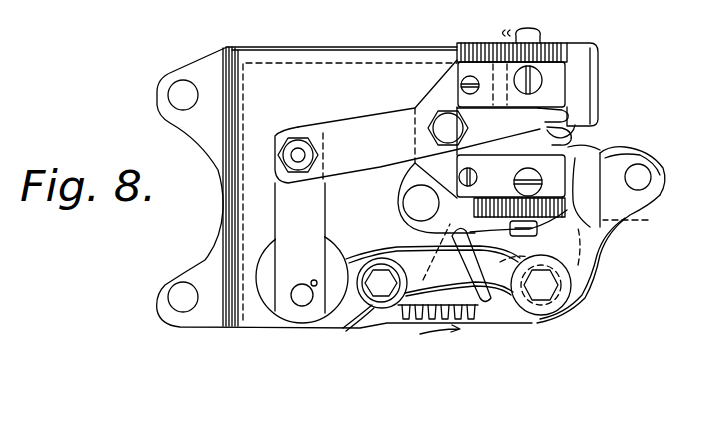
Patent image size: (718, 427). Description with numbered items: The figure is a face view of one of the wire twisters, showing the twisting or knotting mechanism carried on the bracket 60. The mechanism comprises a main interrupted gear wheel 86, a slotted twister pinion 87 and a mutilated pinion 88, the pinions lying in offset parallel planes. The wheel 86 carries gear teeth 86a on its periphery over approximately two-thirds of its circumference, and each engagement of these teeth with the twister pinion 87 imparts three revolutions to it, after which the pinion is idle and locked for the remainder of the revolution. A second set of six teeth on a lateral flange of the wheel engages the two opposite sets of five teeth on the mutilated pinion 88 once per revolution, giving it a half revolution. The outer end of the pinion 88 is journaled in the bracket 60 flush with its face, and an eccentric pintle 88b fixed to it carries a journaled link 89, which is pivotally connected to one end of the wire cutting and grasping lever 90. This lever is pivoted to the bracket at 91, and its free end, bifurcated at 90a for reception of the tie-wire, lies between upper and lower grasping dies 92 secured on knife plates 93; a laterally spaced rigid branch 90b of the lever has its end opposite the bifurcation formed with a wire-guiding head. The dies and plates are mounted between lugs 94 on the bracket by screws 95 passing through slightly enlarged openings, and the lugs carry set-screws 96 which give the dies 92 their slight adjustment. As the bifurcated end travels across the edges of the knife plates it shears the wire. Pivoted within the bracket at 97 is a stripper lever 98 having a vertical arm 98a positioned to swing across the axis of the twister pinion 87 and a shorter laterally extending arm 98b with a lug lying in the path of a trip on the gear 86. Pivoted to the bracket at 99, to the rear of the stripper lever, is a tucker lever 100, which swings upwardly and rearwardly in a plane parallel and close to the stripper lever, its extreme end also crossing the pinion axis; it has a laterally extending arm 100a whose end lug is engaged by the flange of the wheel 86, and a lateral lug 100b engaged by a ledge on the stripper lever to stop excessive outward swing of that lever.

The bracket 60 is at (237, 303).
The main interrupted gear wheel 86 is at (430, 300).
The gear teeth 86a is at (470, 315).
The slotted twister pinion 87 is at (572, 146).
The mutilated pinion 88 is at (243, 318).
The eccentric pintle 88b is at (301, 306).
The link 89 is at (280, 224).
The wire cutting and grasping lever 90 is at (433, 135).
The bifurcation 90a is at (553, 110).
The rigid branch 90b is at (391, 122).
The pivot 91 is at (441, 114).
The grasping dies 92 is at (563, 88).
The knife plates 93 is at (447, 78).
The lugs 94 is at (570, 47).
The screws 95 is at (545, 80).
The set-screws 96 is at (515, 29).
The pivot 97 is at (568, 290).
The stripper lever 98 is at (572, 272).
The vertical arm 98a is at (573, 132).
The laterally extending arm 98b is at (535, 325).
The pivot 99 is at (380, 284).
The tucker lever 100 is at (455, 228).
The laterally extending arm 100a is at (468, 241).
The lateral lug 100b is at (655, 215).